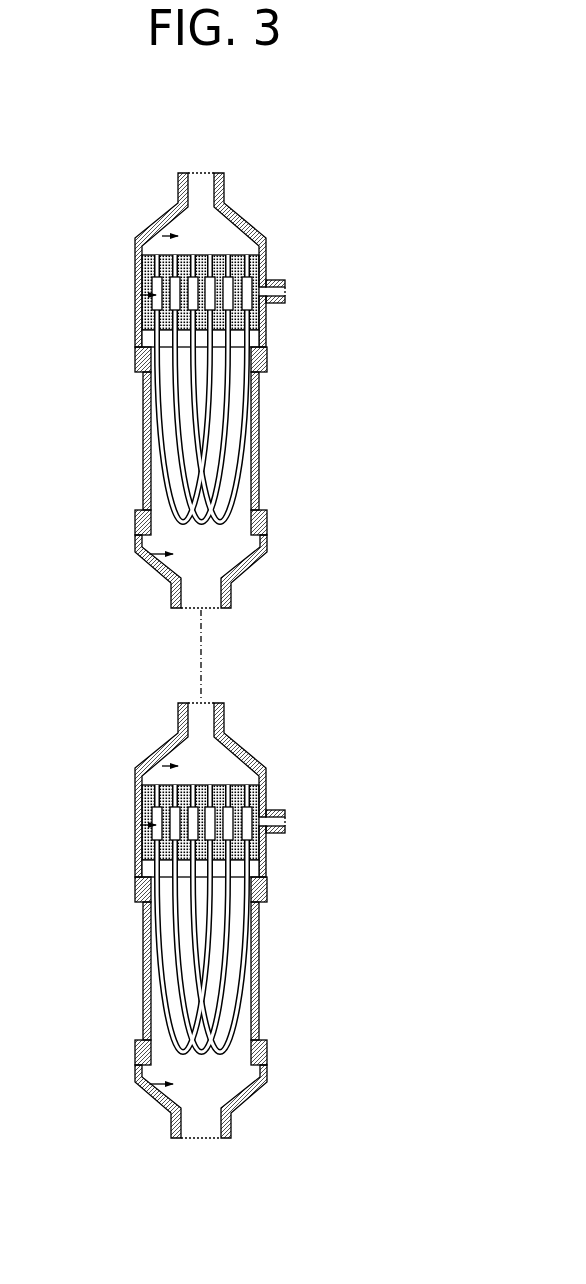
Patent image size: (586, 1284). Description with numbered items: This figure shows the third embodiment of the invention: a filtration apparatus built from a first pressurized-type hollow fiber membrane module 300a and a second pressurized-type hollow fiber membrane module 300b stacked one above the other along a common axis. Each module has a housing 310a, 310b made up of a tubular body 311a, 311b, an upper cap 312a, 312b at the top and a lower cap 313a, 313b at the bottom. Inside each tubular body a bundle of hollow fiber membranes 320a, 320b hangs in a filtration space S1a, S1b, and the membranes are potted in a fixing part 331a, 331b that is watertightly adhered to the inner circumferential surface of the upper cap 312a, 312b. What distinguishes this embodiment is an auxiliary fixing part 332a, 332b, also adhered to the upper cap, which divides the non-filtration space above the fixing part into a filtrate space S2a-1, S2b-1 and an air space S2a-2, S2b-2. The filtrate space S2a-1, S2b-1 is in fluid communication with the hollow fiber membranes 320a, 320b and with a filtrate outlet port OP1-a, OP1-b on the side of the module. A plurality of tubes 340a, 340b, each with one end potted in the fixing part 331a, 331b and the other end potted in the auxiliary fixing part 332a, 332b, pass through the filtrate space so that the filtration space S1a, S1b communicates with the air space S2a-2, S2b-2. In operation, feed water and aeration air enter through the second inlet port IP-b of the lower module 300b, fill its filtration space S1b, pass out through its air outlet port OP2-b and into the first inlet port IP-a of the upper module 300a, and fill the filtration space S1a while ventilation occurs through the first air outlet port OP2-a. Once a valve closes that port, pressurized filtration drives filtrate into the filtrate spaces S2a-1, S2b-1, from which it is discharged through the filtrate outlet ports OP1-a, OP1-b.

The first hollow fiber membrane module 300a is at (266, 188).
The second hollow fiber membrane module 300b is at (218, 901).
The module housing 310a is at (268, 441).
The module housing 310b is at (269, 971).
The tubular body 311a is at (262, 438).
The tubular body 311b is at (243, 971).
The upper cap 312a is at (264, 358).
The upper cap 312b is at (239, 887).
The lower cap 313a is at (239, 524).
The lower cap 313b is at (239, 1054).
The hollow fiber membranes 320a is at (155, 400).
The hollow fiber membranes 320b is at (166, 918).
The fixing part 331a is at (266, 318).
The fixing part 331b is at (247, 831).
The auxiliary fixing part 332a is at (266, 262).
The auxiliary fixing part 332b is at (244, 790).
The tubes 340a is at (268, 281).
The tubes 340b is at (309, 814).
The first filtrate outlet port OP1-a is at (286, 294).
The second filtrate outlet port OP1-b is at (325, 829).
The first air outlet port OP2-a is at (177, 188).
The second air outlet port OP2-b is at (158, 716).
The first inlet port IP-a is at (232, 596).
The second inlet port IP-b is at (243, 1131).
The filtration space S1a is at (143, 553).
The filtration space S1b is at (120, 1097).
The filtrate space S2a-1 is at (140, 295).
The filtrate space S2b-1 is at (94, 816).
The air space S2a-2 is at (162, 236).
The air space S2b-2 is at (119, 751).